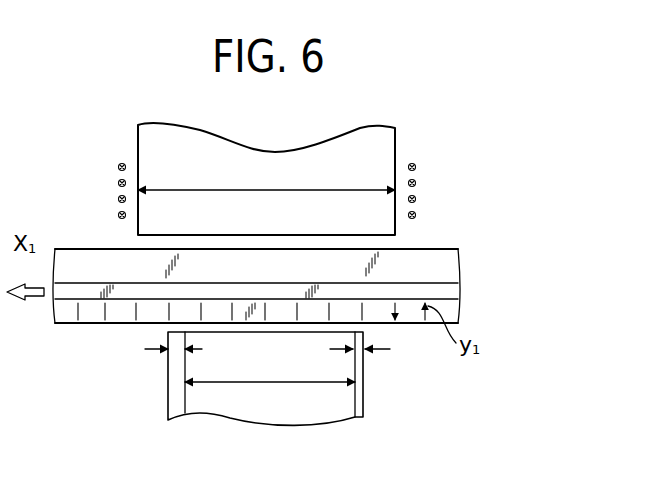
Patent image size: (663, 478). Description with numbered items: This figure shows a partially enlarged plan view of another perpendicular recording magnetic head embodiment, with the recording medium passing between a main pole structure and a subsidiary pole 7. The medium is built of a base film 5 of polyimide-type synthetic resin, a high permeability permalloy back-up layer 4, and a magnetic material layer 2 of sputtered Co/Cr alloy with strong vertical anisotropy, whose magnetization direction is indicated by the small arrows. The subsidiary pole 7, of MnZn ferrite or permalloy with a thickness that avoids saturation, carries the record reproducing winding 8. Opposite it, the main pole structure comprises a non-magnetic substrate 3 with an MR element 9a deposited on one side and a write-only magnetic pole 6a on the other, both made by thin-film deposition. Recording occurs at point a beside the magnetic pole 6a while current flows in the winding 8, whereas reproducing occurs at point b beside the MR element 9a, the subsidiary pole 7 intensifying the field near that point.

The magnetic material layer 2 is at (412, 315).
The non-magnetic substrate 3 is at (224, 400).
The back-up layer 4 is at (452, 287).
The base film 5 is at (447, 262).
The write-only magnetic pole 6a is at (168, 395).
The subsidiary pole 7 is at (385, 220).
The record reproducing winding 8 is at (416, 214).
The MR element 9a is at (358, 390).